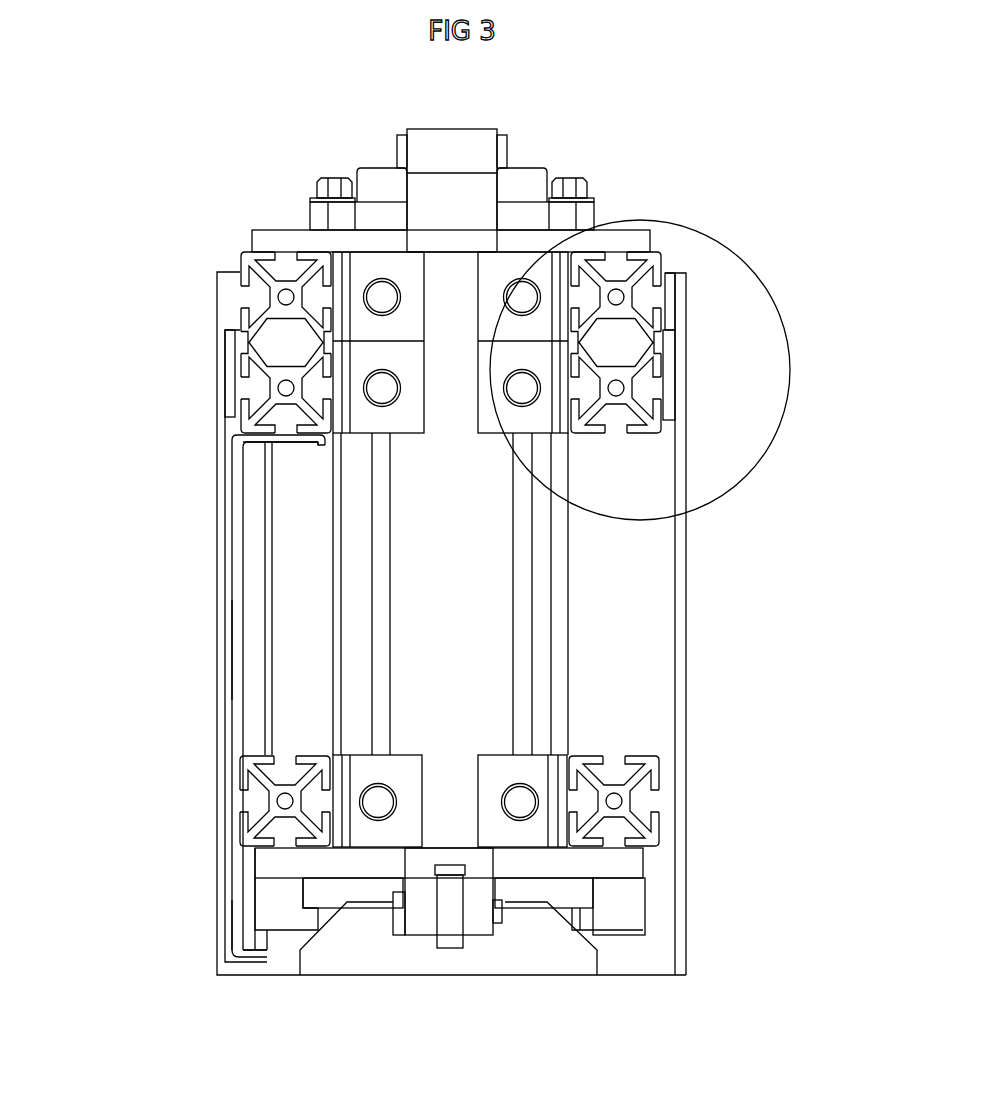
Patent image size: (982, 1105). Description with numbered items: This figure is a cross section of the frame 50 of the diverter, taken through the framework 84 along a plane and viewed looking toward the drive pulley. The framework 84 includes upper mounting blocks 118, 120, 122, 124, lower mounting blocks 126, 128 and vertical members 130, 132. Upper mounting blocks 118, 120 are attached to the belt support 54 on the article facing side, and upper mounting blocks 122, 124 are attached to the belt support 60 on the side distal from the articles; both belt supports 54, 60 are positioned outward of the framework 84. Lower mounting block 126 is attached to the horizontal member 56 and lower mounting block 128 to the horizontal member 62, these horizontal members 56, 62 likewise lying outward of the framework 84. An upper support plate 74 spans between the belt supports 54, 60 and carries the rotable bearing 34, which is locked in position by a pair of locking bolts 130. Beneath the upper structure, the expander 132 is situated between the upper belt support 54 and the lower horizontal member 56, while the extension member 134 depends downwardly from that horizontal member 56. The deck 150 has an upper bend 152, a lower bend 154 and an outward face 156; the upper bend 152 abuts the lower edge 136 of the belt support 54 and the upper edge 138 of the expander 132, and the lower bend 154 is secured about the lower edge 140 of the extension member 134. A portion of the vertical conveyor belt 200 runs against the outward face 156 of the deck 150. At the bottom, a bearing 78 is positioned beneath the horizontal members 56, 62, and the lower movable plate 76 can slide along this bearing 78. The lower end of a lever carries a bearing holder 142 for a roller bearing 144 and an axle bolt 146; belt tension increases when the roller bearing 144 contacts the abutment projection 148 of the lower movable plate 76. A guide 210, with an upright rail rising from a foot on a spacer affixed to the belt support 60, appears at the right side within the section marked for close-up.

The rotable bearing 34 is at (383, 165).
The frame 50 is at (815, 310).
The belt support 54 is at (240, 262).
The horizontal member 56 is at (233, 802).
The belt support 60 is at (592, 285).
The horizontal member 62 is at (650, 765).
The upper support plate 74 is at (360, 238).
The lower movable plate 76 is at (622, 932).
The bearing 78 is at (632, 866).
The framework 84 is at (130, 382).
The upper mounting block 118 is at (370, 267).
The upper mounting block 120 is at (363, 358).
The upper mounting block 122 is at (522, 263).
The upper mounting block 124 is at (537, 413).
The lower mounting block 126 is at (373, 773).
The lower mounting block 128 is at (530, 768).
The locking bolts 130 is at (330, 176).
The expander 132 is at (255, 612).
The extension member 134 is at (233, 923).
The lower edge 136 is at (325, 445).
The upper edge 138 is at (282, 443).
The lower edge 140 is at (265, 960).
The bearing holder 142 is at (545, 950).
The roller bearing 144 is at (482, 907).
The axle bolt 146 is at (397, 915).
The abutment projection 148 is at (600, 978).
The deck 150 is at (230, 660).
The upper bend 152 is at (255, 460).
The lower bend 154 is at (247, 958).
The outward face 156 is at (232, 692).
The vertical conveyor belt 200 is at (210, 597).
The guide 210 is at (677, 287).